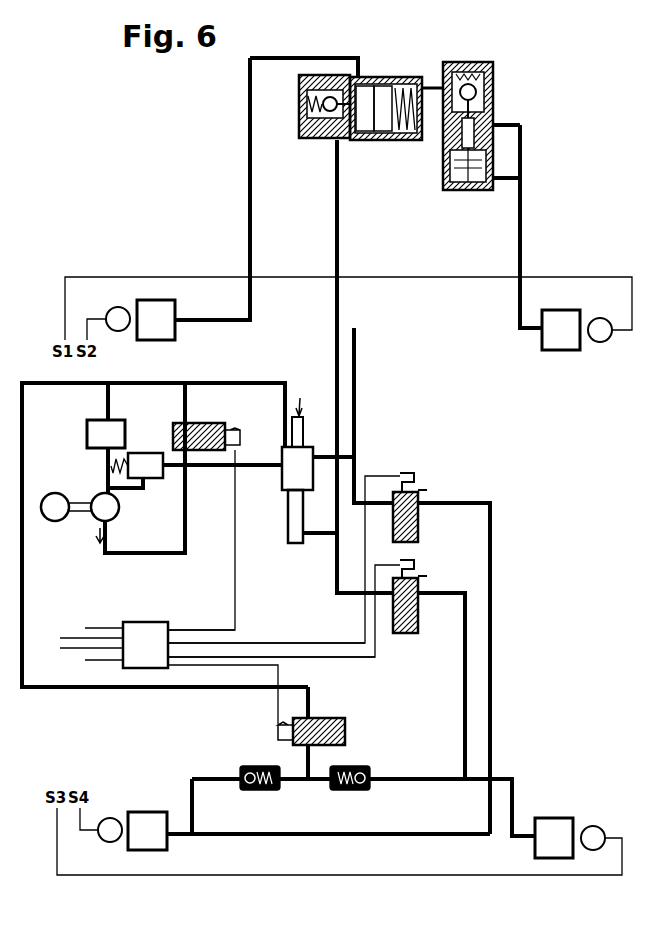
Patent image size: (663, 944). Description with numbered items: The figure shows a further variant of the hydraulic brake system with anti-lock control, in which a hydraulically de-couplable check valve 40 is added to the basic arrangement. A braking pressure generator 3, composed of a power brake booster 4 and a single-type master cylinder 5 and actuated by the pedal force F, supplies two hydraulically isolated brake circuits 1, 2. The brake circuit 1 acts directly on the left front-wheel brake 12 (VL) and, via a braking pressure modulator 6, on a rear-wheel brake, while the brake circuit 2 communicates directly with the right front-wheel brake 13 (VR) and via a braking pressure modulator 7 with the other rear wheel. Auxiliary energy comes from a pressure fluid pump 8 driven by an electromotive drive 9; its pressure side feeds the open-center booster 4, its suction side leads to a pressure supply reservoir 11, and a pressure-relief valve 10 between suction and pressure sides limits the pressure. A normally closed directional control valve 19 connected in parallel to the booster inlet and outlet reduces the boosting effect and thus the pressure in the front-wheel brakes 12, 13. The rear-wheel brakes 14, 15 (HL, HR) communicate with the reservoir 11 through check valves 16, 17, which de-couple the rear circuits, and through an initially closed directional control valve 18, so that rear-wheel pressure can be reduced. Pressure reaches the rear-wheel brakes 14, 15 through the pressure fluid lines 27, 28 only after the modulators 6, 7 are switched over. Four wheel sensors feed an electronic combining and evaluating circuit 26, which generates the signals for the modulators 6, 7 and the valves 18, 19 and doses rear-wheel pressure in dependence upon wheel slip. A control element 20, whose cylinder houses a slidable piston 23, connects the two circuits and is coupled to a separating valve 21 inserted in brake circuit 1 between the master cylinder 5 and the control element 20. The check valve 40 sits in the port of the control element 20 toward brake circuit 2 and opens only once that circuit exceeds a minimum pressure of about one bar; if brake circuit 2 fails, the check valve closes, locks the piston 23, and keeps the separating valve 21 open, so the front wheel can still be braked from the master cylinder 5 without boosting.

The brake circuit 1 is at (335, 405).
The brake circuit 2 is at (356, 405).
The braking pressure generator 3 is at (283, 445).
The power brake booster 4 is at (288, 485).
The master cylinder 5 is at (288, 533).
The braking pressure modulator 6 is at (418, 610).
The braking pressure modulator 7 is at (418, 519).
The pressure fluid pump 8 is at (97, 493).
The electromotive drive 9 is at (52, 493).
The pressure-relief valve 10 is at (148, 453).
The pressure supply reservoir 11 is at (87, 437).
The front-wheel brake 12 is at (155, 300).
The front-wheel brake 13 is at (560, 310).
The rear-wheel brake 14 is at (148, 850).
The rear-wheel brake 15 is at (553, 858).
The check valve 16 is at (260, 790).
The check valve 17 is at (350, 790).
The two-way/two-position directional control valve 18 is at (345, 730).
The two-way/two-position directional control valve 19 is at (198, 423).
The control element 20 is at (343, 134).
The separating valve 21 is at (299, 130).
The piston 23 is at (380, 140).
The electronic combining and evaluating circuit 26 is at (143, 668).
The pressure fluid line 27 is at (462, 728).
The pressure fluid line 28 is at (493, 728).
The check valve 40 is at (505, 107).